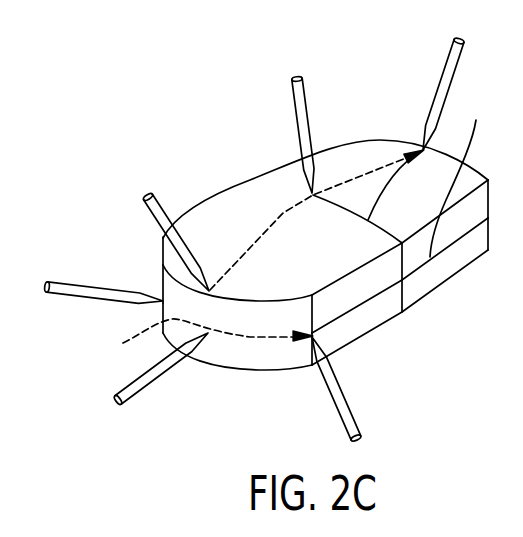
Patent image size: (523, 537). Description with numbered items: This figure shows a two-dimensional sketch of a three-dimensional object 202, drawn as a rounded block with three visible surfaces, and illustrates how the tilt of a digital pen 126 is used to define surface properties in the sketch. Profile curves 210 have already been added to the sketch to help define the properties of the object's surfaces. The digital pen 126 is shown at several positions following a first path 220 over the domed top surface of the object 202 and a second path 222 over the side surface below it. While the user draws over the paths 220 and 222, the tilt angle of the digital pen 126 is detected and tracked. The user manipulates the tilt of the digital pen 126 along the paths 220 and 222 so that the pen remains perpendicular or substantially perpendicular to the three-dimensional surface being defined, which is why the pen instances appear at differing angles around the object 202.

The 3D object 202 is at (356, 138).
The profile curves 210 is at (476, 120).
The path 220 is at (286, 214).
The path 222 is at (123, 343).
The digital pen 126 is at (152, 198).